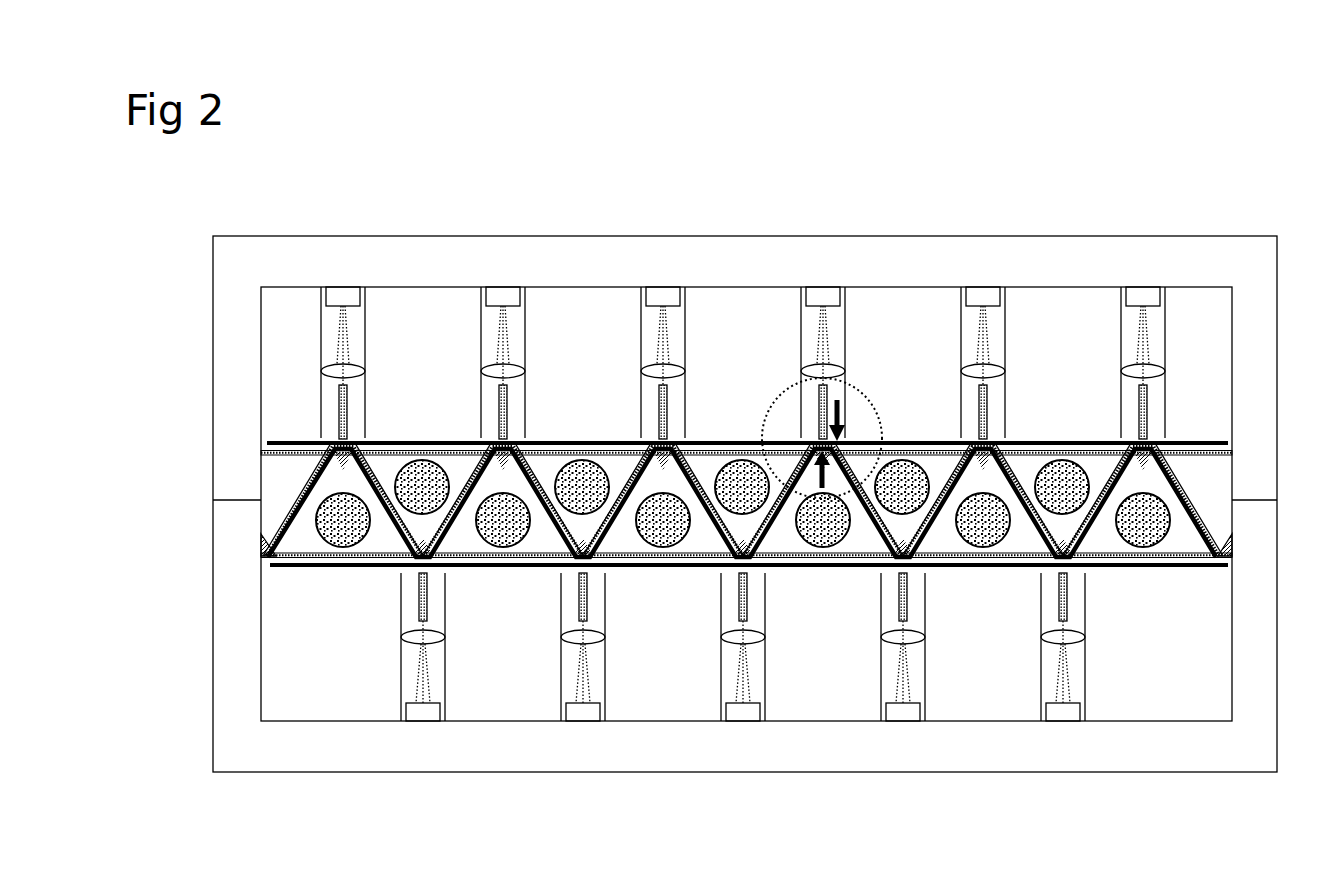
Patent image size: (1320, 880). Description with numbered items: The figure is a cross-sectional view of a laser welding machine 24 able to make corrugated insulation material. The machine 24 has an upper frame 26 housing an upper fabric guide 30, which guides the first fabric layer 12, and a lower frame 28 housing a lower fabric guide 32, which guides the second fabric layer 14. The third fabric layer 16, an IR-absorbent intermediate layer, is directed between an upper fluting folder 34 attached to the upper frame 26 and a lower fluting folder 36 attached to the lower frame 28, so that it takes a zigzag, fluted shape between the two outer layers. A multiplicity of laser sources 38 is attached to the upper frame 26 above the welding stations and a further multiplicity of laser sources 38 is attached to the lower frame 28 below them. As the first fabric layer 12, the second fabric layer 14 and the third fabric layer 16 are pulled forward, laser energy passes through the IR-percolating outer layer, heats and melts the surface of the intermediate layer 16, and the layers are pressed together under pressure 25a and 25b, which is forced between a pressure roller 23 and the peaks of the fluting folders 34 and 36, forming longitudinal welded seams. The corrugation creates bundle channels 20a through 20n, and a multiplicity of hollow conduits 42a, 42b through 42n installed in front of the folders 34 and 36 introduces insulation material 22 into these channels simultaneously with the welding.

The first fabric layer 12 is at (265, 443).
The second fabric layer 14 is at (323, 567).
The third fabric layer 16 is at (262, 560).
The bundle channel 20a is at (939, 477).
The bundle channel 20n is at (1095, 475).
The insulation material 22 is at (1160, 545).
The pressure roller 23 is at (804, 440).
The laser welding machine 24 is at (461, 119).
The pressure 25a is at (825, 490).
The pressure 25b is at (835, 393).
The upper frame 26 is at (278, 273).
The lower frame 28 is at (325, 738).
The upper fabric guide 30 is at (693, 450).
The lower fabric guide 32 is at (690, 558).
The upper fluting folder 34 is at (318, 473).
The lower fluting folder 36 is at (277, 533).
The laser source 38 is at (992, 333).
The hollow conduit 42a is at (403, 467).
The hollow conduit 42b is at (565, 467).
The hollow conduit 42n is at (505, 540).